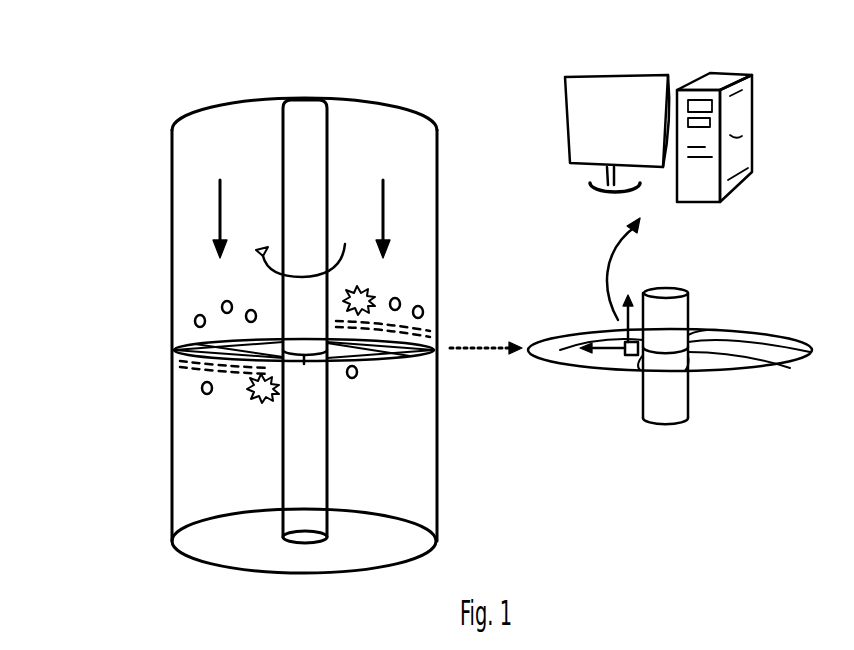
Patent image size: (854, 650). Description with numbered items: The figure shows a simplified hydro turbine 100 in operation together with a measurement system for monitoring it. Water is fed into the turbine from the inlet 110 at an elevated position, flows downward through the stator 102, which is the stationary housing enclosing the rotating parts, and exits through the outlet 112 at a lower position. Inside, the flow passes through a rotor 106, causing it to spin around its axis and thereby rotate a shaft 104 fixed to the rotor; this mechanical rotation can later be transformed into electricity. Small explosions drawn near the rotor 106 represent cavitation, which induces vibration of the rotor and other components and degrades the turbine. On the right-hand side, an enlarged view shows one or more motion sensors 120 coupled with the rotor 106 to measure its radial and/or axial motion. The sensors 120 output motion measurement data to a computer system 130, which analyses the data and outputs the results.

The hydro turbine 100 is at (128, 272).
The stator 102 is at (437, 286).
The shaft 104 is at (315, 171).
The rotor 106 is at (563, 367).
The inlet 110 is at (304, 85).
The outlet 112 is at (304, 563).
The motion sensor 120 is at (622, 340).
The computer system 130 is at (563, 78).